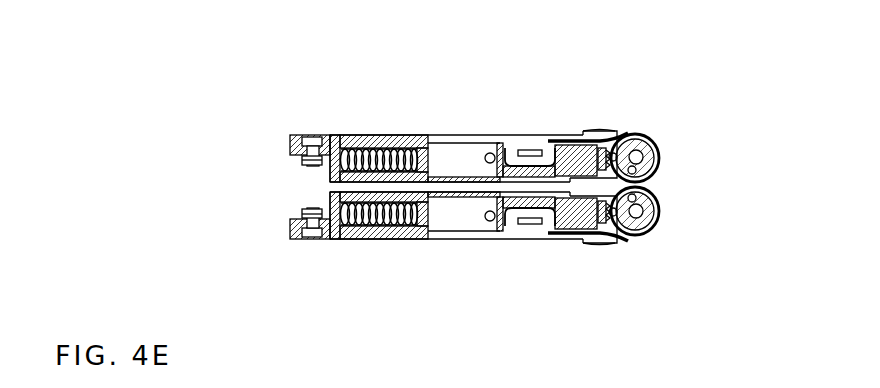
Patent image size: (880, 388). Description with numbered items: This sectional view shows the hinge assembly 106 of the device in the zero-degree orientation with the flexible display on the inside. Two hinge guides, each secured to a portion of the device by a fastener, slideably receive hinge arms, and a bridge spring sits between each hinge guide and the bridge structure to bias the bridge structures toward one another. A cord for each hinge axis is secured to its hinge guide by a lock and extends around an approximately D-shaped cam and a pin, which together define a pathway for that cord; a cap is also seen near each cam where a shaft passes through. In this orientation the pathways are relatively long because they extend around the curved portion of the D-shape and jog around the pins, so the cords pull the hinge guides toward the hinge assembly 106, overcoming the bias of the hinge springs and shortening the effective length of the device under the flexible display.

The hinge assembly 106 is at (176, 62).